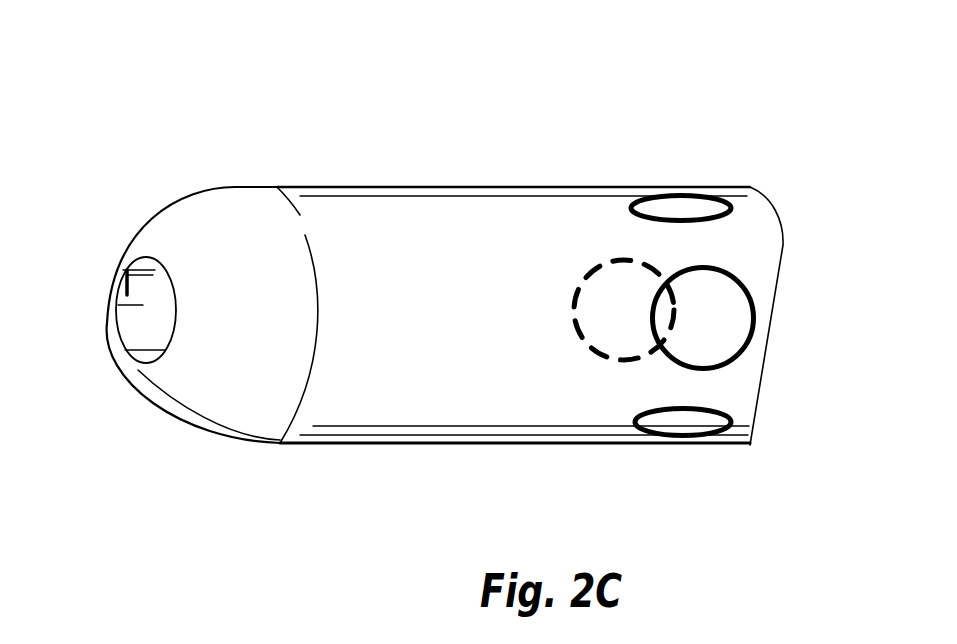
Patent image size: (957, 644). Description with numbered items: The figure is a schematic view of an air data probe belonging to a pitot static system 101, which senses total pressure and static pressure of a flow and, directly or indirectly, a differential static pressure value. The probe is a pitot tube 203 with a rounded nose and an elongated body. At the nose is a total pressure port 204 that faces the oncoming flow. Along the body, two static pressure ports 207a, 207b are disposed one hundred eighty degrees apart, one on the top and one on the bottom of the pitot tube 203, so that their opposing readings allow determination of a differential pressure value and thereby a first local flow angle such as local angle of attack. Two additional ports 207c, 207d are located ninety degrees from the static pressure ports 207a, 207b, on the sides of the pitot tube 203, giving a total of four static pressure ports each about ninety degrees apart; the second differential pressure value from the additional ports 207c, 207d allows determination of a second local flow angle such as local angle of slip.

The pitot static system 101 is at (147, 176).
The pitot tube 203 is at (528, 408).
The total pressure port 204 is at (127, 273).
The static pressure port 207a is at (663, 195).
The static pressure port 207b is at (730, 408).
The additional port 207c is at (753, 315).
The additional port 207d is at (586, 283).